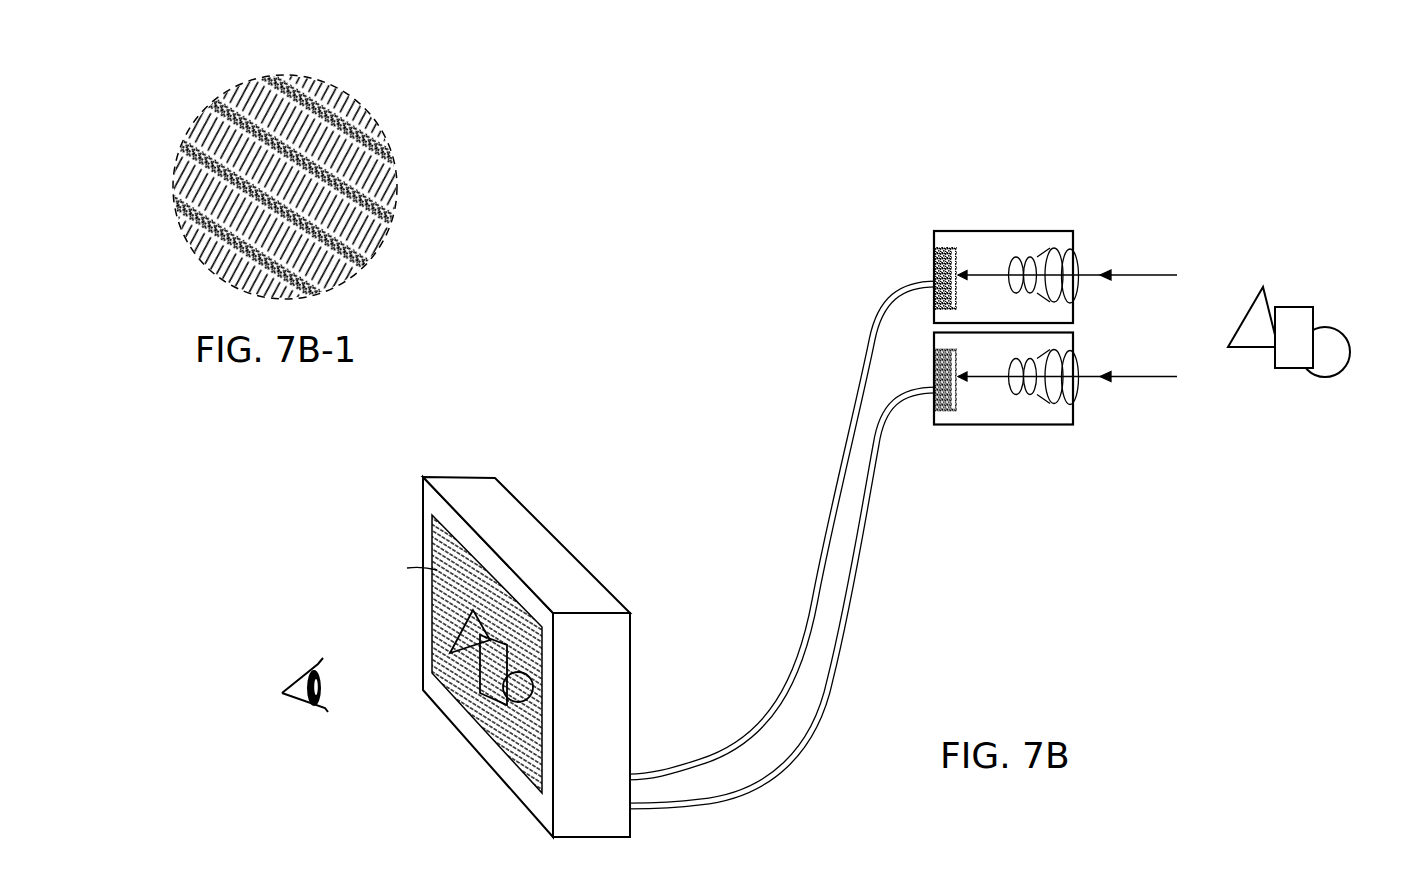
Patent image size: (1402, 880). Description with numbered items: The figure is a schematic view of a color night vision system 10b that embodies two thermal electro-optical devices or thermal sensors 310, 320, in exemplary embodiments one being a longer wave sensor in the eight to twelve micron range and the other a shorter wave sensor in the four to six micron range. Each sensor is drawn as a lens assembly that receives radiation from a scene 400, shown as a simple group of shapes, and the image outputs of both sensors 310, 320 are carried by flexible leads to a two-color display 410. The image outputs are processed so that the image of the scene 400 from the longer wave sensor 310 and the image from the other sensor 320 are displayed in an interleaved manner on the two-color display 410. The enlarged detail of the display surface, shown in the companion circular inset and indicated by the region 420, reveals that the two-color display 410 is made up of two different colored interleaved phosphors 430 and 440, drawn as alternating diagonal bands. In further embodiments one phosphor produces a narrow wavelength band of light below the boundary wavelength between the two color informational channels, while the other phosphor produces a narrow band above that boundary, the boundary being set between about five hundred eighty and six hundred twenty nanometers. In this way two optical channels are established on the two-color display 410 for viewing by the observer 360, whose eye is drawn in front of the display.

In FIG. 7B, the color night vision system 10b is at (1222, 148).
In FIG. 7B, the longer wave sensor 310 is at (993, 231).
In FIG. 7B, the sensor 320 is at (998, 423).
In FIG. 7B, the observer 360 is at (303, 700).
In FIG. 7B, the scene 400 is at (1326, 292).
In FIG. 7B, the two-color display 410 is at (588, 837).
In FIG. 7B-1, the display screen region 420 is at (175, 191).
In FIG. 7B-1, the interleaved phosphor 430 is at (318, 92).
In FIG. 7B-1, the interleaved phosphor 440 is at (285, 78).